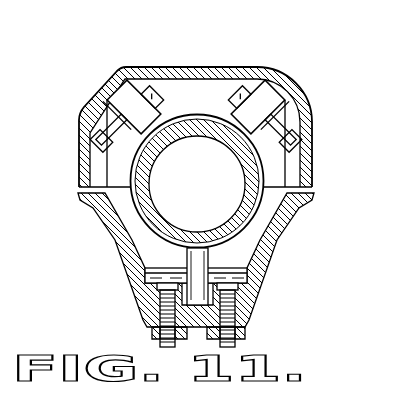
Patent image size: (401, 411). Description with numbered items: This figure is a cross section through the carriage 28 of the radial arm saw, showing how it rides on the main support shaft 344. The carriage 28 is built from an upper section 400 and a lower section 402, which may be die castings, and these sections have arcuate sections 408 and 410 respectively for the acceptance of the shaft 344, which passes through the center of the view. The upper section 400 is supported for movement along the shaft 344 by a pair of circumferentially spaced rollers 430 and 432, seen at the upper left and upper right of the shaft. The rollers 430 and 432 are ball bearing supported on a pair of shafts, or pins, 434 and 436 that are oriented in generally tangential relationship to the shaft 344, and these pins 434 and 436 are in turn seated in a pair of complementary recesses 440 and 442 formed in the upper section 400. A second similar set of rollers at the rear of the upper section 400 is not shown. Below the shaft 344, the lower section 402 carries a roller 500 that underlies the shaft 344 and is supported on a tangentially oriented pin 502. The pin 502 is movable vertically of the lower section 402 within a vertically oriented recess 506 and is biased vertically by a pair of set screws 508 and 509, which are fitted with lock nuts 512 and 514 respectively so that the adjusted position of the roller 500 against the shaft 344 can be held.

The carriage 28 is at (300, 88).
The shaft 344 is at (196, 112).
The upper section 400 is at (298, 112).
The lower section 402 is at (249, 282).
The arcuate section 408 is at (206, 137).
The arcuate section 410 is at (146, 218).
The roller 430 is at (134, 81).
The roller 432 is at (266, 89).
The shaft 434 is at (91, 151).
The shaft 436 is at (296, 144).
The recess 440 is at (100, 133).
The recess 442 is at (286, 134).
The roller 500 is at (197, 246).
The pin 502 is at (241, 263).
The recess 506 is at (240, 291).
The set screw 508 is at (157, 308).
The set screw 509 is at (251, 311).
The lock nut 512 is at (152, 329).
The lock nut 514 is at (247, 329).